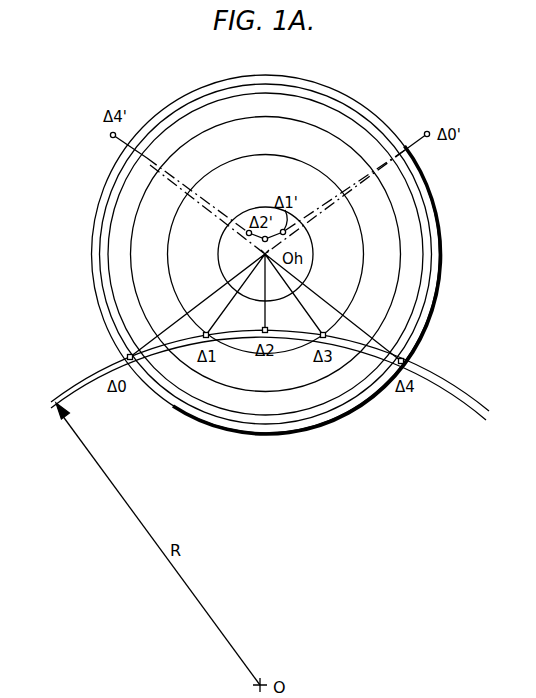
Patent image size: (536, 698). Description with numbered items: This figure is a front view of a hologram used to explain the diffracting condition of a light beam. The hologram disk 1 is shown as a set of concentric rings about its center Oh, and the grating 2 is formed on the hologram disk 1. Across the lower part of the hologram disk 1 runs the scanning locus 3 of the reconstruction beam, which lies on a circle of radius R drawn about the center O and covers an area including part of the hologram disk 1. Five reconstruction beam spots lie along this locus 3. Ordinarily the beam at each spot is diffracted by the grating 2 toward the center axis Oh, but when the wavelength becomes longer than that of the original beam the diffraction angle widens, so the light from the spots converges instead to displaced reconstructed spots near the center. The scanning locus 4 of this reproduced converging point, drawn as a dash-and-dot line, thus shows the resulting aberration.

The hologram disk 1 is at (341, 98).
The grating 2 is at (303, 97).
The locus of the reconstruction beam 3 is at (475, 400).
The locus of spots reproduced on the focus point 4 is at (364, 175).